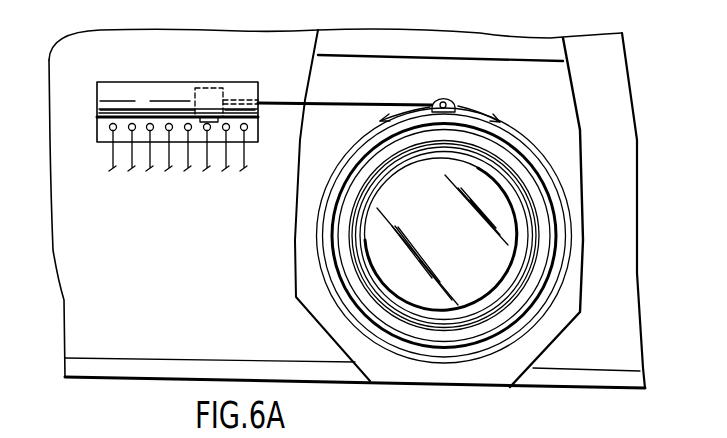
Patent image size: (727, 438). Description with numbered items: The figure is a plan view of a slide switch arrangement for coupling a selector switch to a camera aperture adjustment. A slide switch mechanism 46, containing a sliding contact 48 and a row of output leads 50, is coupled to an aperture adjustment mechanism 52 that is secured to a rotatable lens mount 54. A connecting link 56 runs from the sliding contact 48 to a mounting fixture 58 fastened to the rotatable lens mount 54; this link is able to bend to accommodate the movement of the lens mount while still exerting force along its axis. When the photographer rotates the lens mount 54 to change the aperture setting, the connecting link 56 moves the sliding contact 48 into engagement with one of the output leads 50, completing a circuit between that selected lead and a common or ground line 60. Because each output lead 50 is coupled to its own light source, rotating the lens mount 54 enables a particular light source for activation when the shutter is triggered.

The slide switch mechanism 46 is at (151, 73).
The sliding contact 48 is at (181, 88).
The output leads 50 is at (166, 153).
The aperture adjustment mechanism 52 is at (519, 129).
The rotatable lens mount 54 is at (451, 239).
The connecting link 56 is at (337, 103).
The mounting fixture 58 is at (456, 106).
The common or ground line 60 is at (214, 88).